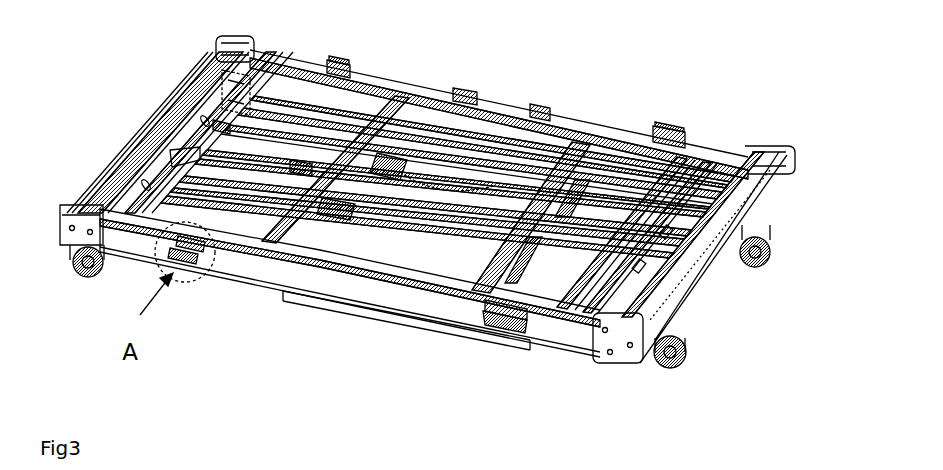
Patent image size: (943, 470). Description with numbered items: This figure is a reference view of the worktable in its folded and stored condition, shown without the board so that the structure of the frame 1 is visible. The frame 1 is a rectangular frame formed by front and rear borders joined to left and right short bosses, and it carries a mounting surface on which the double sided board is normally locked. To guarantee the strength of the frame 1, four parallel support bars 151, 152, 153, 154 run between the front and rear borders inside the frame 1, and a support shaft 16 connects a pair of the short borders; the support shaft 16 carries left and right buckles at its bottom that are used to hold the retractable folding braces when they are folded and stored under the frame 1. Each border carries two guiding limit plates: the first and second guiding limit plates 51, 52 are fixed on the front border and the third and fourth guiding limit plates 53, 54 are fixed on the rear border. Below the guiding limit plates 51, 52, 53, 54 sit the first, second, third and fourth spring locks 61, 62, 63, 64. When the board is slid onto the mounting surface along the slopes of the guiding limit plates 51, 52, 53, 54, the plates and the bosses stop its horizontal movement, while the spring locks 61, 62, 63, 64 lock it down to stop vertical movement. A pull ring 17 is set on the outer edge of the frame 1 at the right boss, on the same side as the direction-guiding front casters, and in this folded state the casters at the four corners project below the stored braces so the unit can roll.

The frame 1 is at (707, 153).
The support shaft 16 is at (640, 257).
The pull ring 17 is at (707, 243).
The first guiding limit plate 51 is at (200, 247).
The second guiding limit plate 52 is at (507, 313).
The third guiding limit plate 53 is at (325, 68).
The fourth guiding limit plate 54 is at (658, 125).
The first spring lock 61 is at (192, 240).
The second spring lock 62 is at (513, 327).
The third spring lock 63 is at (343, 68).
The fourth spring lock 64 is at (673, 127).
The first support bar 151 is at (225, 135).
The second support bar 152 is at (300, 167).
The third support bar 153 is at (557, 177).
The fourth support bar 154 is at (659, 213).